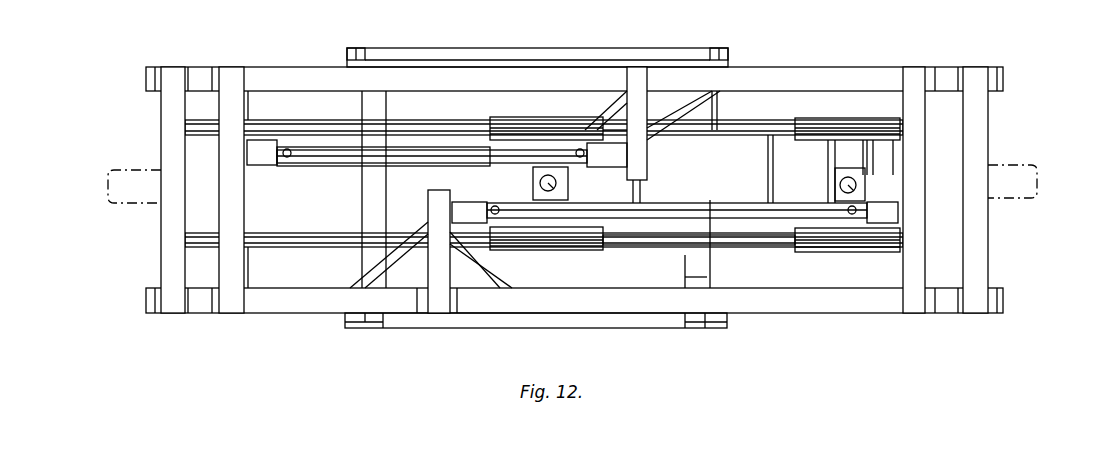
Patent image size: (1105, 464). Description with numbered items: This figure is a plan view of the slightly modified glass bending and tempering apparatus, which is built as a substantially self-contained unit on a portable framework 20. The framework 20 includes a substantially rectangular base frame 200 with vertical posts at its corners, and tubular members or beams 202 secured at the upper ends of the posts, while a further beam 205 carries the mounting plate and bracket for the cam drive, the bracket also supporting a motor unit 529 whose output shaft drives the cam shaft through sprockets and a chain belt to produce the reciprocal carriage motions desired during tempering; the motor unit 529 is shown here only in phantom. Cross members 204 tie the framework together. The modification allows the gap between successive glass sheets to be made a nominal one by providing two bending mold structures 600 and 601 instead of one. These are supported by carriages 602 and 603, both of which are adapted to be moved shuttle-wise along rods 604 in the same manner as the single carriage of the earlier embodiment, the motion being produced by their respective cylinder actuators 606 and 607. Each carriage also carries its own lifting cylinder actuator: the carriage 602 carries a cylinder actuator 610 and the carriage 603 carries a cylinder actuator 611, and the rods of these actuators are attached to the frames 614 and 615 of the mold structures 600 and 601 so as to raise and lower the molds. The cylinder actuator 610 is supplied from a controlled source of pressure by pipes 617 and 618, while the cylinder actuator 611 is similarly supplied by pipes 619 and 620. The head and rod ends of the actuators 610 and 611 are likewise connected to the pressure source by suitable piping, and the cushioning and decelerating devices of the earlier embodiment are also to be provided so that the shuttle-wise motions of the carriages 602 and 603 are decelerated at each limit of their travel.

The framework 20 is at (270, 57).
The base frame 200 is at (404, 334).
The tubular members or beams 202 is at (862, 76).
The cross member 204 is at (237, 105).
The beam 205 is at (168, 130).
The motor unit 529 is at (100, 158).
The bending mold structure 600 is at (447, 180).
The bending mold structure 601 is at (745, 180).
The carriage 602 is at (565, 108).
The carriage 603 is at (837, 110).
The rods 604 is at (326, 120).
The cylinder actuator 606 is at (442, 156).
The cylinder actuator 607 is at (667, 212).
The cylinder actuator 610 is at (548, 180).
The cylinder actuator 611 is at (840, 178).
The frame 614 is at (457, 195).
The frame 615 is at (757, 167).
The pipe 617 is at (285, 160).
The pipe 618 is at (583, 150).
The pipe 619 is at (505, 228).
The pipe 620 is at (850, 213).